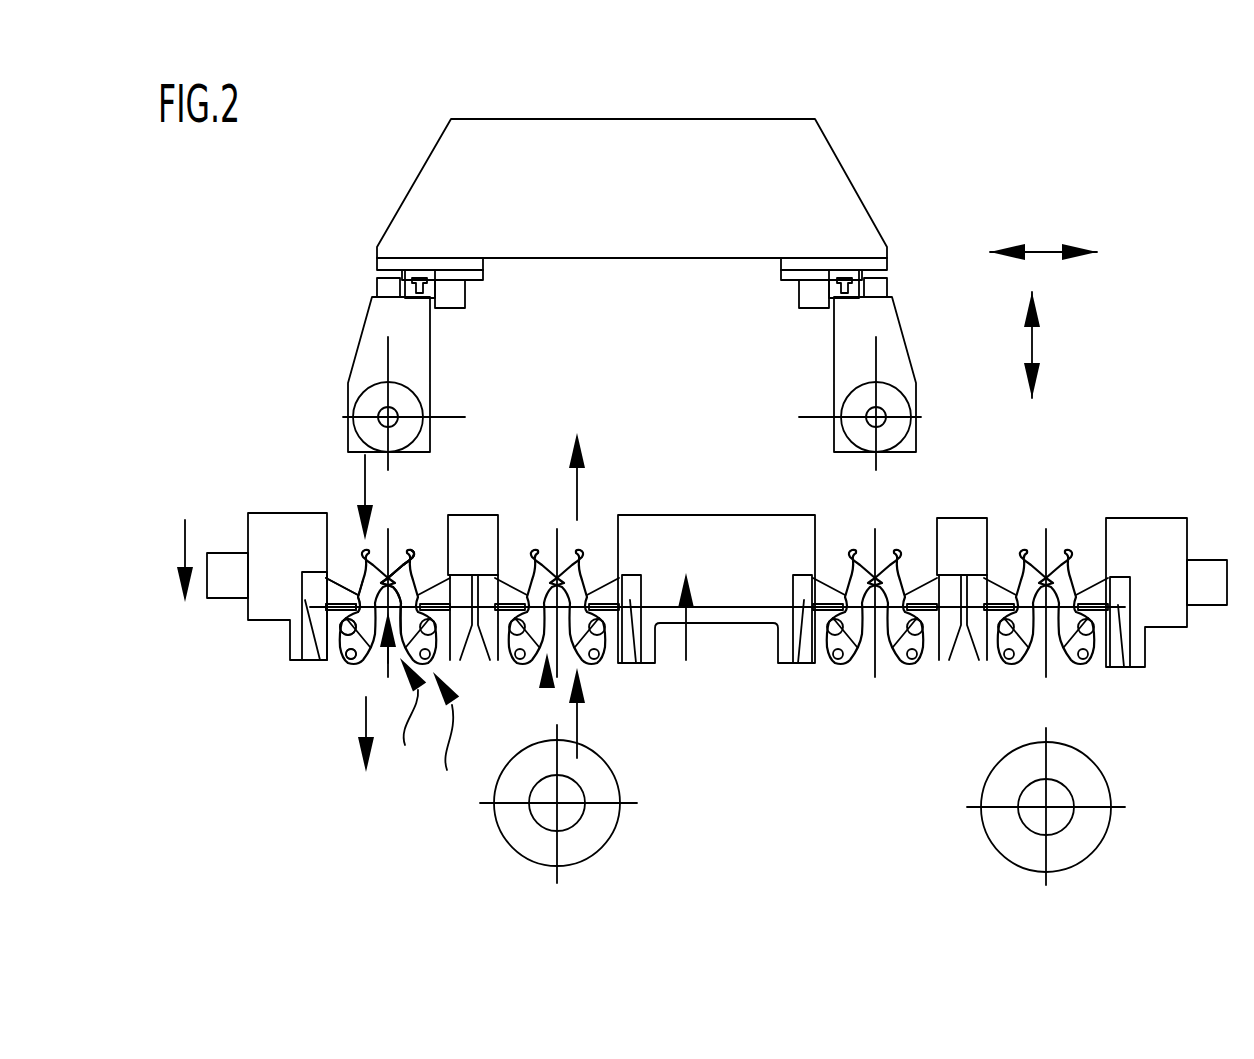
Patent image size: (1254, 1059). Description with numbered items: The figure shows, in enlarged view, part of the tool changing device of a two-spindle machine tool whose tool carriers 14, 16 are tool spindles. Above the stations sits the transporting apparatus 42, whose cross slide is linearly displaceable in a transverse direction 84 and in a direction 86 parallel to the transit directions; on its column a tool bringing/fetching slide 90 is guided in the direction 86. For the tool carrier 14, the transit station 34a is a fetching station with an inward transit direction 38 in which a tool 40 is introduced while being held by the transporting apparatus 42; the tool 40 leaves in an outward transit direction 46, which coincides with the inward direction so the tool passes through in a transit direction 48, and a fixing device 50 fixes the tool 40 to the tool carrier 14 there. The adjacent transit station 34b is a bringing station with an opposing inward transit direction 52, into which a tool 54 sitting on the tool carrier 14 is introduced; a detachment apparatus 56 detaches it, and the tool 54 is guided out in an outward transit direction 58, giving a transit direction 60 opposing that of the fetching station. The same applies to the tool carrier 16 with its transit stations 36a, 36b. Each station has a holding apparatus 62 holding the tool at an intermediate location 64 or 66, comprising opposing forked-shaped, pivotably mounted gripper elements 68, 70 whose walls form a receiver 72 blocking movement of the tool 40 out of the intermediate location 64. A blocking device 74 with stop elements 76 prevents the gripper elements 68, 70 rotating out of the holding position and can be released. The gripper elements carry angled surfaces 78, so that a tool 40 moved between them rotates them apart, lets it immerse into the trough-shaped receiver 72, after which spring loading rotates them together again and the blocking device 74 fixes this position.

The transporting apparatus 42 is at (516, 85).
The tool bringing/fetching slide 90 is at (680, 140).
The direction 84 is at (1045, 250).
The direction 86 is at (1035, 345).
The tool 40 is at (405, 400).
The transit station 34a is at (240, 488).
The transit station 34b is at (626, 406).
The transit station 36a is at (806, 696).
The transit station 36b is at (1112, 712).
The inward transit direction 38 is at (358, 478).
The transit direction 48 is at (182, 540).
The gripper element 68 is at (352, 565).
The surfaces 78 is at (404, 562).
The gripper element 70 is at (424, 562).
The intermediate location 64 is at (362, 590).
The receiver 72 is at (342, 608).
The stop element 76 is at (347, 660).
The fixing device 50 is at (377, 653).
The holding apparatus 62 is at (409, 721).
The blocking device 74 is at (449, 739).
The outward transit direction 46 is at (348, 765).
The detachment apparatus 56 is at (547, 682).
The outward transit direction 58 is at (583, 490).
The transit direction 60 is at (688, 633).
The intermediate location 66 is at (600, 605).
The inward transit direction 52 is at (578, 720).
The tool carrier 14 is at (612, 785).
The tool 54 is at (573, 812).
The tool carrier 16 is at (1015, 838).